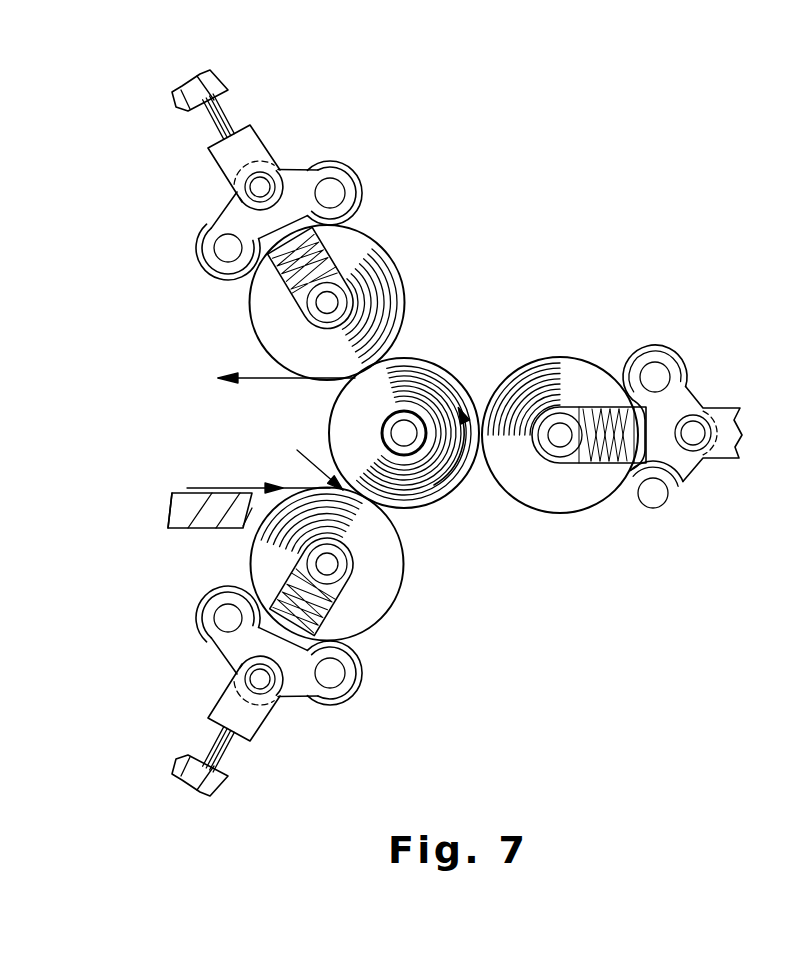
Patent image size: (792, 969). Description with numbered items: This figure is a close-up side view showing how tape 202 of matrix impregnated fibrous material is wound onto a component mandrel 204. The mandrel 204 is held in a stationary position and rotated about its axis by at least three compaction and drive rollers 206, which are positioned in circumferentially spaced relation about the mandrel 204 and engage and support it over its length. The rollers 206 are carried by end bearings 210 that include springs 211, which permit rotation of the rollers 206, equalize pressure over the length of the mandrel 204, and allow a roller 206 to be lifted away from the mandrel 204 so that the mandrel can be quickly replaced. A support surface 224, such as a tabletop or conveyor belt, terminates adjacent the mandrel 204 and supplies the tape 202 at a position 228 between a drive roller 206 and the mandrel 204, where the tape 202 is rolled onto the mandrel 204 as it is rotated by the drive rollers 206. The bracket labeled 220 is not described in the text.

The tape 202 is at (220, 488).
The component mandrel 204 is at (448, 383).
The compaction and drive rollers 206 is at (368, 253).
The end bearings 210 is at (563, 410).
The springs 211 is at (328, 598).
The pivot arm 220 is at (672, 349).
The surface 224 is at (180, 493).
The position 228 is at (301, 462).